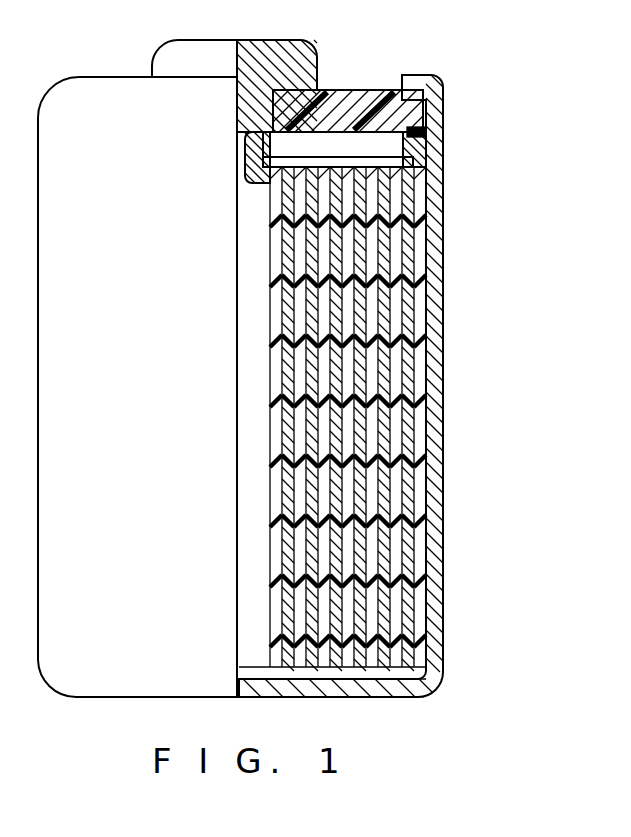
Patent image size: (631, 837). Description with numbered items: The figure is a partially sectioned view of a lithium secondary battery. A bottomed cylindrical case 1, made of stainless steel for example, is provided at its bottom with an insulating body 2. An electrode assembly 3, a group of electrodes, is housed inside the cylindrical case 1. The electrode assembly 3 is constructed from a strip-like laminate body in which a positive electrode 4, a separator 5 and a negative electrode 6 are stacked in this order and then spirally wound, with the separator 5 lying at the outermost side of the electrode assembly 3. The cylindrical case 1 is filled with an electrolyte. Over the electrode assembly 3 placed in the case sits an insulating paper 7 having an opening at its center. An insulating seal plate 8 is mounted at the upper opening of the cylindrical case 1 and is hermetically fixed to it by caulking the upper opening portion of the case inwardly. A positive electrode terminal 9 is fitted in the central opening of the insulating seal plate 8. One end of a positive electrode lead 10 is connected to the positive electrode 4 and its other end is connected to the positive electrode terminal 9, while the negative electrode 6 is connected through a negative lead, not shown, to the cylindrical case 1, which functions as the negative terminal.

The cylindrical case 1 is at (433, 590).
The insulating body 2 is at (383, 673).
The electrode assembly 3 is at (478, 233).
The positive electrode 4 is at (378, 259).
The separator 5 is at (393, 288).
The negative electrode 6 is at (403, 322).
The insulating paper 7 is at (433, 157).
The insulating seal plate 8 is at (358, 98).
The positive electrode terminal 9 is at (278, 47).
The positive electrode lead 10 is at (250, 165).